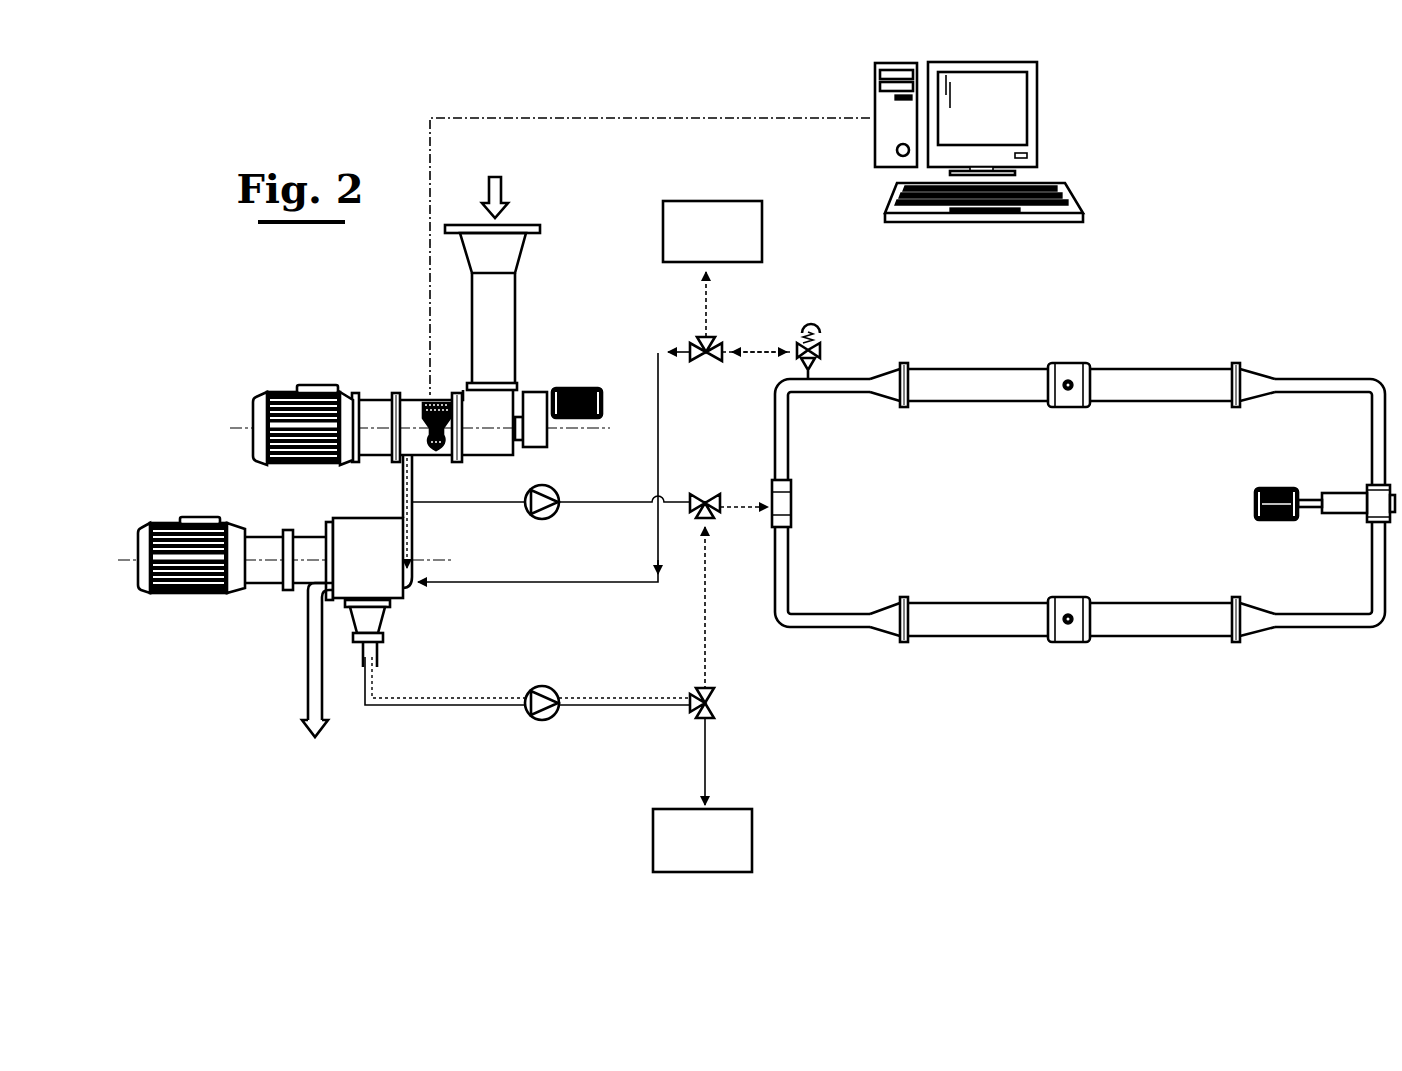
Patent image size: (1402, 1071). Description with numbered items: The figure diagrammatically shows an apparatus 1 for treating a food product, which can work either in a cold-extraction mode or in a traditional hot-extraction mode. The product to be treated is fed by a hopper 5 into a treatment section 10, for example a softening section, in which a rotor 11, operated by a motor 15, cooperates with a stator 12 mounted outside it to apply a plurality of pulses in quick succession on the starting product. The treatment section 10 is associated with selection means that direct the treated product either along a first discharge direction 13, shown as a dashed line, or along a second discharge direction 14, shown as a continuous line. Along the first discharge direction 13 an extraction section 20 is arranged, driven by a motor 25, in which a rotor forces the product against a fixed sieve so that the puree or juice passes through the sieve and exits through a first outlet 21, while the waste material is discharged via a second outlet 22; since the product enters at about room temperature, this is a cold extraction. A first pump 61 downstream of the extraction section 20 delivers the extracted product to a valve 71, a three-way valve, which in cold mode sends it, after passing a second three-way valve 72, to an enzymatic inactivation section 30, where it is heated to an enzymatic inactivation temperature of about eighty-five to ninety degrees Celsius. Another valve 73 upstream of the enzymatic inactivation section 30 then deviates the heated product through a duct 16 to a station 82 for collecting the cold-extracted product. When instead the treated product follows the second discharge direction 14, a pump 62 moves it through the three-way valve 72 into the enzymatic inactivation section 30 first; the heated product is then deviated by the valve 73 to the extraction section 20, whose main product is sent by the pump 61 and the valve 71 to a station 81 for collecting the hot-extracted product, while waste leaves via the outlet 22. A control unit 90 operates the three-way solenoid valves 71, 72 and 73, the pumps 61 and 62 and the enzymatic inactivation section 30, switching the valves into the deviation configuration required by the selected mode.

The apparatus 1 is at (568, 293).
The hopper 5 is at (540, 228).
The treatment section 10 is at (410, 352).
The rotor 11 is at (431, 400).
The stator 12 is at (421, 416).
The first discharge direction 13 is at (403, 513).
The second discharge direction 14 is at (424, 499).
The motor 15 is at (243, 386).
The duct 16 is at (708, 297).
The extraction section 20 is at (323, 518).
The first outlet 21 is at (373, 613).
The second outlet 22 is at (313, 605).
The motor 25 is at (176, 504).
The enzymatic inactivation section 30 is at (1189, 325).
The first pump 61 is at (555, 718).
The pump 62 is at (527, 512).
The valve 71 is at (691, 688).
The second three-way valve 72 is at (708, 492).
The valve 73 is at (684, 333).
The station for collecting the hot-extracted product 81 is at (662, 837).
The station for collecting the cold extracted product 82 is at (707, 212).
The control unit 90 is at (1078, 112).